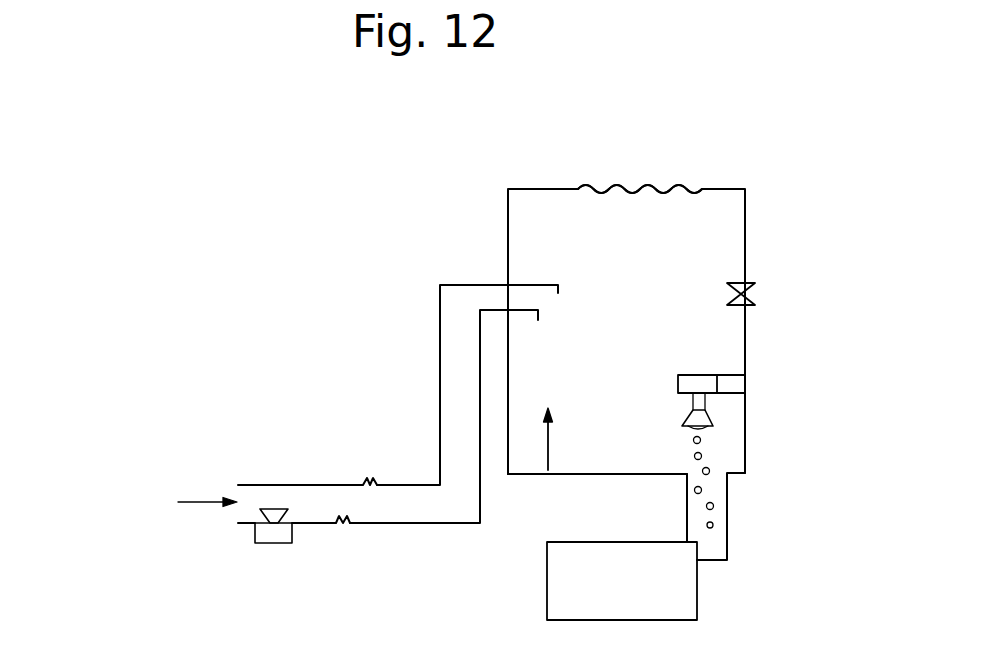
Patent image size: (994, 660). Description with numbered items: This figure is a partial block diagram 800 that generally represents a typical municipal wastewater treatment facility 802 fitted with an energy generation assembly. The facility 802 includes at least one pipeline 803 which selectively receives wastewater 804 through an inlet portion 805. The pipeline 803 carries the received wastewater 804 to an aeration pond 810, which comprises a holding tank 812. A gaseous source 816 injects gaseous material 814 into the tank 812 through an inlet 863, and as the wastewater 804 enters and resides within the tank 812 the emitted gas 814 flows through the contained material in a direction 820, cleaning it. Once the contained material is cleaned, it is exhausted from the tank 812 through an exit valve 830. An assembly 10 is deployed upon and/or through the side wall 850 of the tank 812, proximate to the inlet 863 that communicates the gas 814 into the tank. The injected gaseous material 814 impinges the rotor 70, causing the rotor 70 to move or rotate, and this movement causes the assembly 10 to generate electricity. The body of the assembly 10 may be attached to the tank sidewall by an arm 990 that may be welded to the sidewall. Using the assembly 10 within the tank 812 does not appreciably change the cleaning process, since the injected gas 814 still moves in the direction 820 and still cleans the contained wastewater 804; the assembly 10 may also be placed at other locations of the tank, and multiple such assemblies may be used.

The block diagram 800 is at (320, 290).
The municipal wastewater treatment facility 802 is at (452, 243).
The aeration pond 810 is at (707, 146).
The holding tank 812 is at (522, 477).
The exit valve 830 is at (737, 283).
The side wall 850 is at (744, 338).
The assembly 10 is at (665, 365).
The arm 990 is at (737, 383).
The rotor 70 is at (669, 412).
The direction 820 is at (550, 452).
The inlet 863 is at (687, 505).
The gaseous material 814 is at (714, 525).
The gaseous source 816 is at (547, 590).
The pipeline 803 is at (440, 545).
The wastewater 804 is at (110, 537).
The inlet portion 805 is at (224, 531).